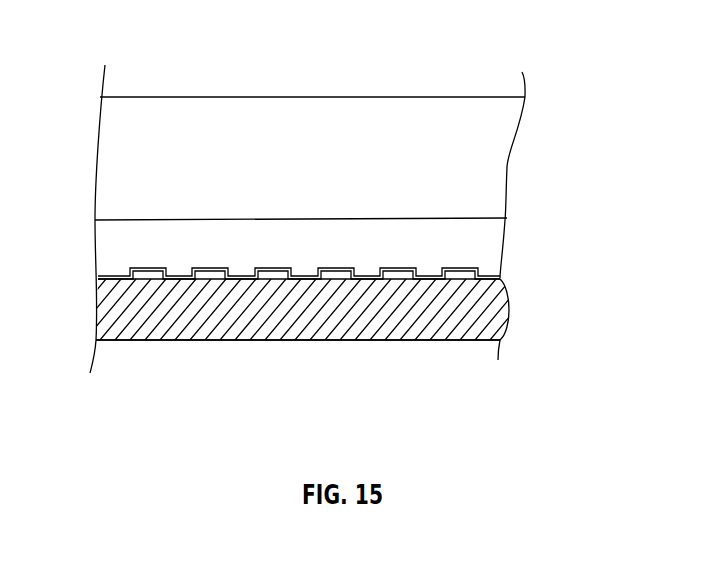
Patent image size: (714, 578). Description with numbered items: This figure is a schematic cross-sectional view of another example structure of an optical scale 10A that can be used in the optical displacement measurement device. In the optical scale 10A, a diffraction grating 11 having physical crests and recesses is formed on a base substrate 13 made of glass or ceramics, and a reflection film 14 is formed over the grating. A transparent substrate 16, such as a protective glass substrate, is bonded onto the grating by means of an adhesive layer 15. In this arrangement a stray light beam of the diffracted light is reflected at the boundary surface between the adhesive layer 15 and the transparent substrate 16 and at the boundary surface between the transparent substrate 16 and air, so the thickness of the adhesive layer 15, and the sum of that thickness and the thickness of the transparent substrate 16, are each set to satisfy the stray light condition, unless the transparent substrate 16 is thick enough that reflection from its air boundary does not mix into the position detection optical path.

The optical scale 10A is at (145, 390).
The diffraction grating 11 is at (120, 292).
The base substrate 13 is at (422, 302).
The reflection film 14 is at (490, 272).
The adhesive layer 15 is at (108, 228).
The transparent substrate 16 is at (440, 115).